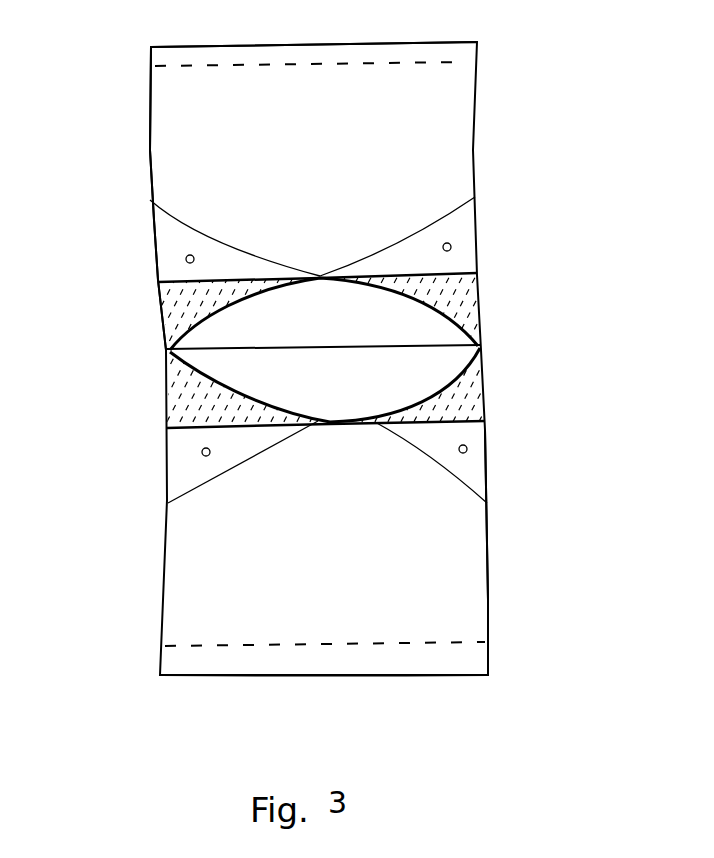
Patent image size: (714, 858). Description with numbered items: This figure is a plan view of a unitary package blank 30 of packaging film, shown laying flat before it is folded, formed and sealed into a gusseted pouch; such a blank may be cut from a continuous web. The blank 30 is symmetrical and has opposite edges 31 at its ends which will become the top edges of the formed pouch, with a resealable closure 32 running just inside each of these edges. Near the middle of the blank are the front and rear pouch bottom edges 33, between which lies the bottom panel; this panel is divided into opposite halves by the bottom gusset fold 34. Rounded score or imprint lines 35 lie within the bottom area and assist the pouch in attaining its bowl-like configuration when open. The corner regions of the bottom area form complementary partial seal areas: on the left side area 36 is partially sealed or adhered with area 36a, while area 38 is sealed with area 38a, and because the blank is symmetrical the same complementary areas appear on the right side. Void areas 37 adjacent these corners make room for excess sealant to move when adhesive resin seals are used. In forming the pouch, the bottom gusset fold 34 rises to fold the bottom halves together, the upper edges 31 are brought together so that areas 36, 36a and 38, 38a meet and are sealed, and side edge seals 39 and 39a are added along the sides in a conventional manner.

The package blank 30 is at (520, 113).
The opposite edges 31 is at (318, 43).
The resealable closure 32 is at (247, 68).
The front and rear pouch bottom edges 33 is at (477, 270).
The bottom gusset fold 34 is at (273, 346).
The score or imprint lines 35 is at (420, 302).
The partial seal area 36 is at (168, 467).
The complementary partial seal area 36a is at (170, 392).
The void areas 37 is at (192, 255).
The partial seal area 38 is at (165, 243).
The complementary partial seal area 38a is at (168, 302).
The side edge seal 39 is at (148, 143).
The side edge seal 39a is at (488, 584).